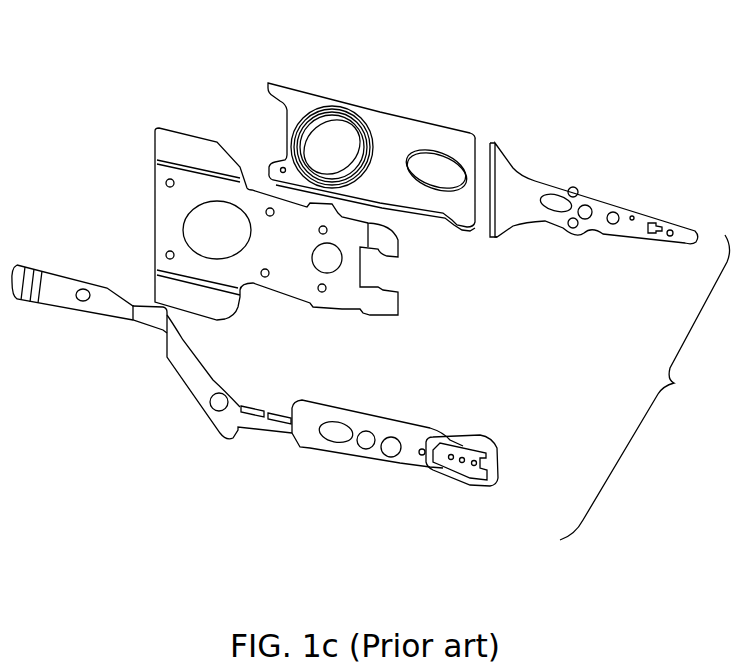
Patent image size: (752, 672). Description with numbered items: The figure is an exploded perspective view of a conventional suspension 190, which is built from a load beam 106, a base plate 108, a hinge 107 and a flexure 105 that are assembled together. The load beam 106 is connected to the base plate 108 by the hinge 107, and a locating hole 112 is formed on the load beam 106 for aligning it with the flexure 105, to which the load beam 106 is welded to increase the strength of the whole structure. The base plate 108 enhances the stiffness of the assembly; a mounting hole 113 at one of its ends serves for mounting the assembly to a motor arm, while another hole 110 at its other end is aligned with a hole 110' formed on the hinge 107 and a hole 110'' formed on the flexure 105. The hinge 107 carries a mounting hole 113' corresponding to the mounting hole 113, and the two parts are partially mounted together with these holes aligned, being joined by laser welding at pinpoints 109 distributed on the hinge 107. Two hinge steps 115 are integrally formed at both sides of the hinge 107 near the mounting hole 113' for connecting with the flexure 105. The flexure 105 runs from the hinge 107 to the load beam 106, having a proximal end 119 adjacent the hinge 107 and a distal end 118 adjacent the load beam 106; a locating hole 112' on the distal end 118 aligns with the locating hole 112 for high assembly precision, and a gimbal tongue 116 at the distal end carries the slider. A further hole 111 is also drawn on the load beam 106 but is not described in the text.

The flexure 105 is at (310, 423).
The load beam 106 is at (517, 182).
The hinge 107 is at (342, 293).
The base plate 108 is at (395, 140).
The pinpoints 109 is at (167, 182).
The hole 110 is at (459, 123).
The hole 110' is at (437, 271).
The hole 110'' is at (190, 440).
The hole 111 is at (672, 233).
The locating hole 112 is at (621, 165).
The locating hole 112' is at (345, 483).
The mounting hole 113 is at (335, 103).
The mounting hole 113' is at (140, 205).
The hinge steps 115 is at (167, 138).
The gimbal tongue 116 is at (463, 462).
The distal end 118 is at (440, 473).
The proximal end 119 is at (62, 288).
The suspension 190 is at (645, 387).